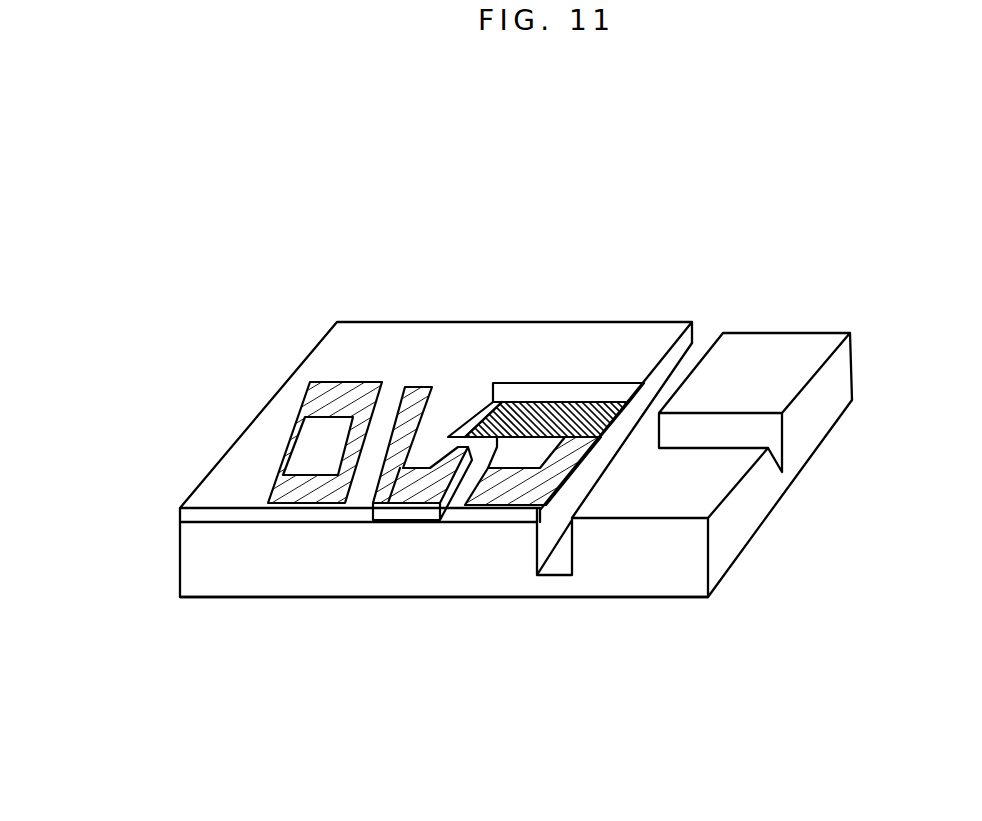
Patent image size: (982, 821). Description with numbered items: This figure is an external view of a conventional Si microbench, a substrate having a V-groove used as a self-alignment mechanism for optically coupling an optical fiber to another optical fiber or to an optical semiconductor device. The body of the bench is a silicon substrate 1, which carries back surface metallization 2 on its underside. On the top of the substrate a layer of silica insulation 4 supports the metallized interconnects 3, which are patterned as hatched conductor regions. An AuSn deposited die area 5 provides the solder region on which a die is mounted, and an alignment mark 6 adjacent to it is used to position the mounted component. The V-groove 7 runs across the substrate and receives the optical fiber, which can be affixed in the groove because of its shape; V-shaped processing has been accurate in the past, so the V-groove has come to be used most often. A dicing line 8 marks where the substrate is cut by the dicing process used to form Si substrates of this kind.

The silicon substrate 1 is at (212, 567).
The back surface metallization 2 is at (285, 597).
The metallized interconnects 3 is at (237, 497).
The silica insulation 4 is at (407, 358).
The AuSn deposited die area 5 is at (580, 398).
The alignment mark 6 is at (508, 402).
The V-groove 7 is at (752, 433).
The dicing line 8 is at (557, 562).